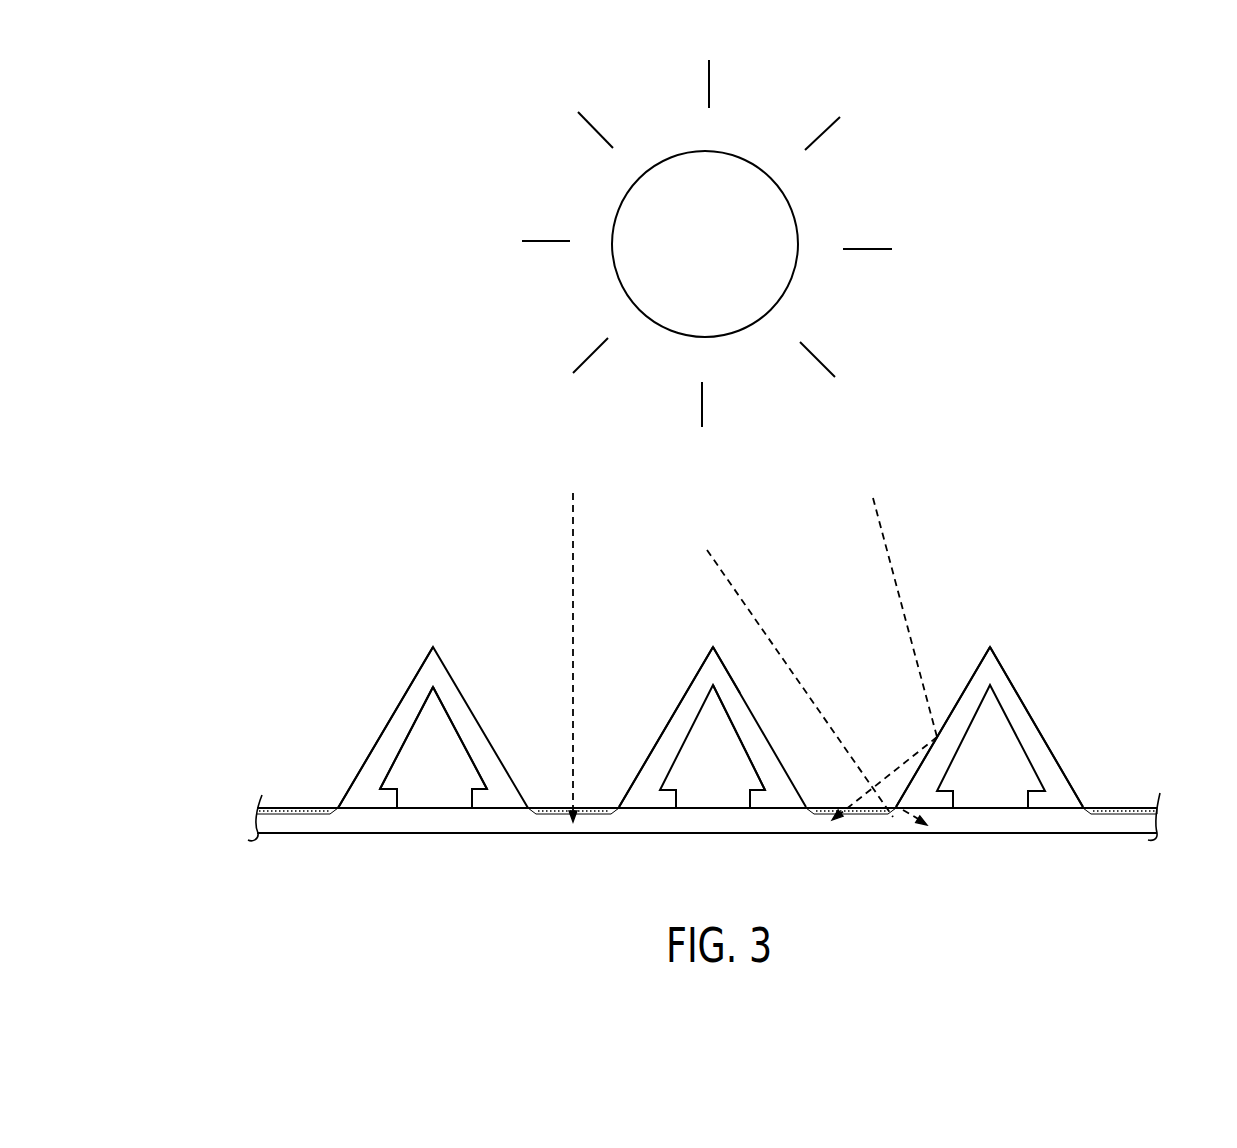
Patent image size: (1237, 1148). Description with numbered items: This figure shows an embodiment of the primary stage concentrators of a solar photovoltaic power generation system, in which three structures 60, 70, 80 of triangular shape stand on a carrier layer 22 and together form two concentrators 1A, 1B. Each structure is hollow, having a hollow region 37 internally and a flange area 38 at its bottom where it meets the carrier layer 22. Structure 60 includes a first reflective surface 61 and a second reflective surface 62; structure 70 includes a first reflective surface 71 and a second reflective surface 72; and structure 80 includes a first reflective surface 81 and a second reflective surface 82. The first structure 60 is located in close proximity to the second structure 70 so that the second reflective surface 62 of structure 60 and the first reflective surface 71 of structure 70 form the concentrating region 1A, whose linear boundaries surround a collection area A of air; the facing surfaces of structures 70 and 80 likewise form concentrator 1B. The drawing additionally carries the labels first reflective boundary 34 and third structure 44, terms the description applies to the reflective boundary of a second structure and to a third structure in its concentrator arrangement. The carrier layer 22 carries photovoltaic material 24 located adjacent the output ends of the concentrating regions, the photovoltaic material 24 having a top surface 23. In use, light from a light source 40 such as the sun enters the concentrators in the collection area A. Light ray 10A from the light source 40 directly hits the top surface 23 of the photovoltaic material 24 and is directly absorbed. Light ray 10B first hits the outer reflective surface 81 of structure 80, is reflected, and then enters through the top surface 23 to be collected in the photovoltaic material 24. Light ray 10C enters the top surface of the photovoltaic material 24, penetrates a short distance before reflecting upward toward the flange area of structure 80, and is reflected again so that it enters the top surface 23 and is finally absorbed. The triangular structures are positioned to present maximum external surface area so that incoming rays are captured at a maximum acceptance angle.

The light source 40 is at (792, 280).
The carrier layer 22 is at (302, 823).
The flange area 38 is at (363, 802).
The solar photovoltaic material 24 is at (597, 815).
The top surface of the solar photovoltaic material 23 is at (1137, 805).
The first structure 60 is at (345, 769).
The first reflective surface of structure 60 61 is at (390, 722).
The second reflective surface of structure 60 62 is at (444, 733).
The hollow region 37 is at (427, 745).
The concentrator 1A is at (530, 713).
The collection area A is at (513, 635).
The second structure 70 is at (630, 739).
The first reflective boundary 34 is at (672, 717).
The first reflective surface of structure 70 71 is at (697, 678).
The second reflective surface of structure 70 72 is at (733, 682).
The concentrator 1B is at (868, 711).
The third structure 80 is at (1065, 738).
The first reflective surface of structure 80 81 is at (977, 677).
The second reflective surface of structure 80 82 is at (1013, 680).
The third structure 44 is at (1063, 772).
The light ray 10A is at (573, 617).
The light ray 10B is at (900, 595).
The light ray 10C is at (758, 623).